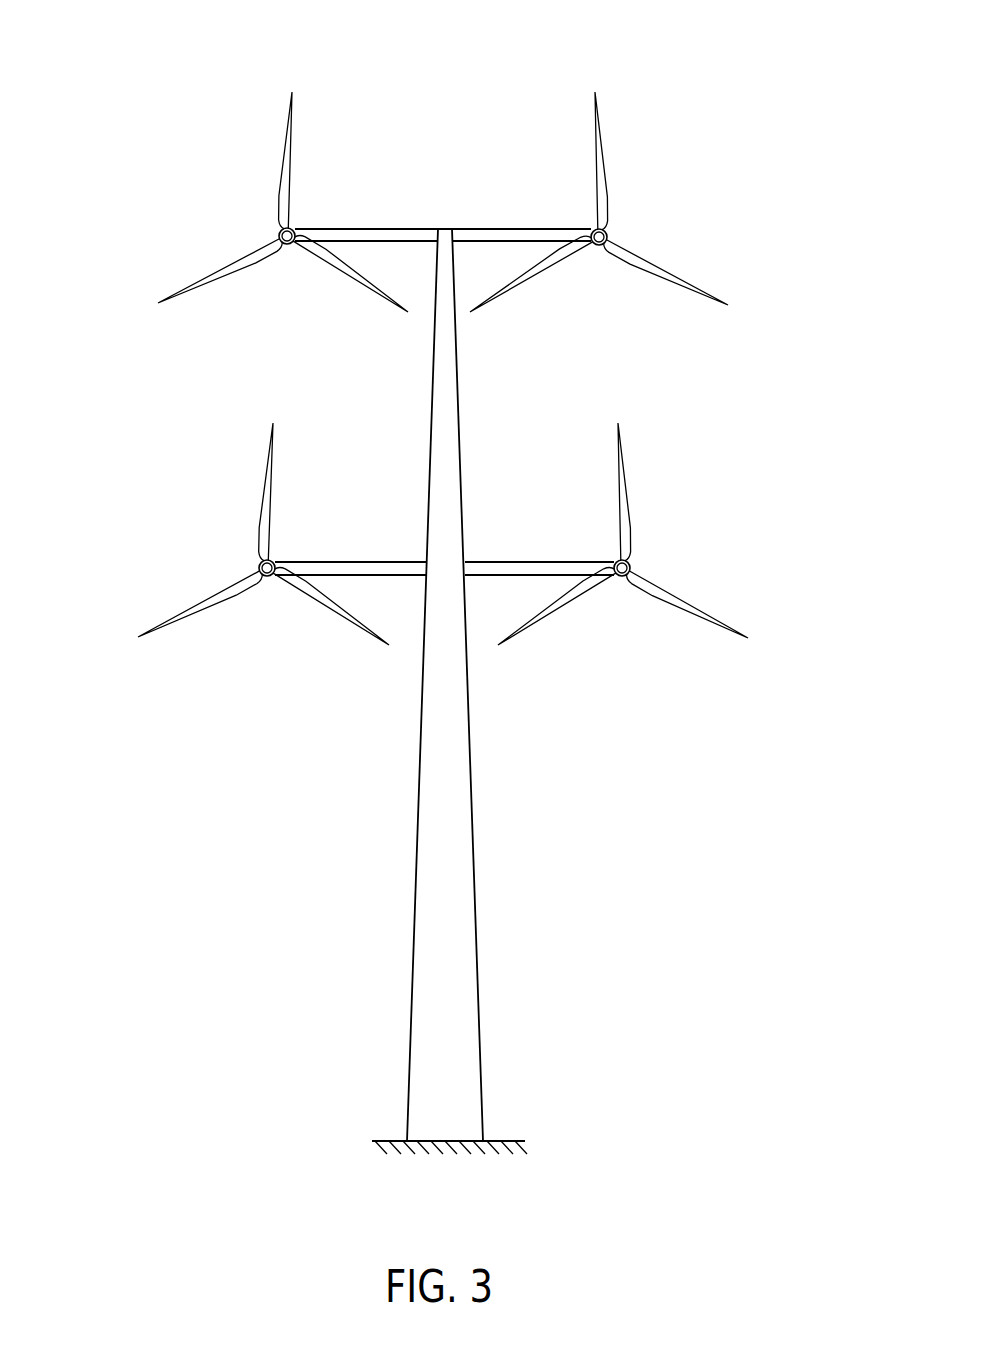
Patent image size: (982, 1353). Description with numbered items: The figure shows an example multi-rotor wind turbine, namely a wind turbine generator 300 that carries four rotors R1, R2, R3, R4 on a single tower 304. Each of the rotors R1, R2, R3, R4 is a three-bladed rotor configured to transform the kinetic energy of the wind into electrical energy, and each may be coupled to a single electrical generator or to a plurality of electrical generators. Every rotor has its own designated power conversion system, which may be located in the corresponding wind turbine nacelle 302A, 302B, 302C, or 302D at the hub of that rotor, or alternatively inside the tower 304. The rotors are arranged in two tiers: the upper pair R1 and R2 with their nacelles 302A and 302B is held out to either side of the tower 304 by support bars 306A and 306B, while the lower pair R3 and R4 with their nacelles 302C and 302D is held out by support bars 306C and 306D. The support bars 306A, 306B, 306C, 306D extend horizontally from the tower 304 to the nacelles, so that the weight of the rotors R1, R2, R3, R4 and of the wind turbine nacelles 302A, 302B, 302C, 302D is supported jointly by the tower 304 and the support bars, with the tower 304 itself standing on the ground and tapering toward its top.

The wind turbine generator 300 is at (125, 47).
The rotor R1 is at (167, 152).
The rotor R2 is at (757, 122).
The rotor R3 is at (167, 495).
The rotor R4 is at (757, 465).
The wind turbine nacelle 302A is at (297, 223).
The wind turbine nacelle 302B is at (611, 222).
The wind turbine nacelle 302C is at (278, 554).
The wind turbine nacelle 302D is at (633, 557).
The tower 304 is at (473, 850).
The support bar 306A is at (432, 243).
The support bar 306B is at (529, 243).
The support bar 306C is at (411, 576).
The support bar 306D is at (550, 576).